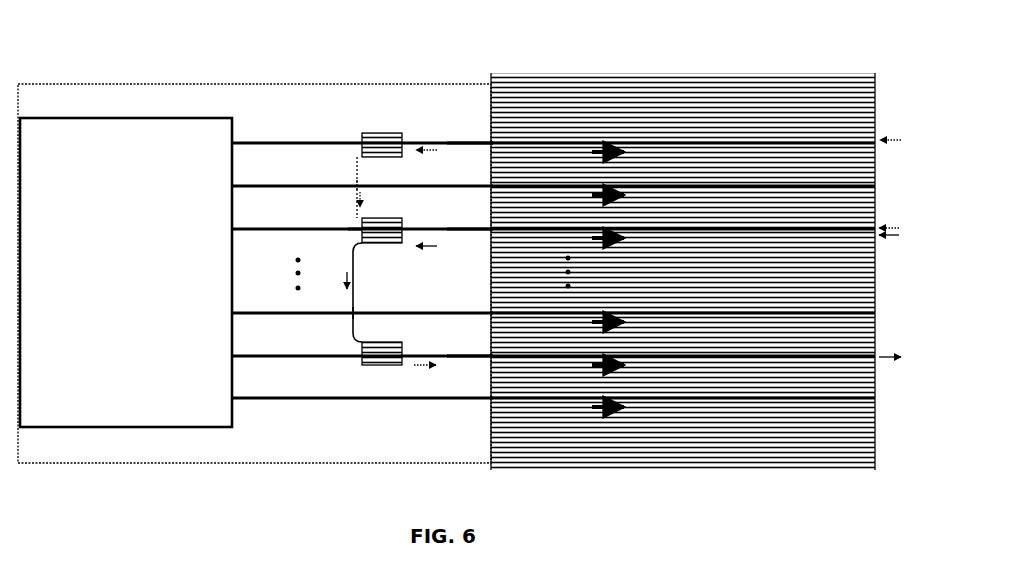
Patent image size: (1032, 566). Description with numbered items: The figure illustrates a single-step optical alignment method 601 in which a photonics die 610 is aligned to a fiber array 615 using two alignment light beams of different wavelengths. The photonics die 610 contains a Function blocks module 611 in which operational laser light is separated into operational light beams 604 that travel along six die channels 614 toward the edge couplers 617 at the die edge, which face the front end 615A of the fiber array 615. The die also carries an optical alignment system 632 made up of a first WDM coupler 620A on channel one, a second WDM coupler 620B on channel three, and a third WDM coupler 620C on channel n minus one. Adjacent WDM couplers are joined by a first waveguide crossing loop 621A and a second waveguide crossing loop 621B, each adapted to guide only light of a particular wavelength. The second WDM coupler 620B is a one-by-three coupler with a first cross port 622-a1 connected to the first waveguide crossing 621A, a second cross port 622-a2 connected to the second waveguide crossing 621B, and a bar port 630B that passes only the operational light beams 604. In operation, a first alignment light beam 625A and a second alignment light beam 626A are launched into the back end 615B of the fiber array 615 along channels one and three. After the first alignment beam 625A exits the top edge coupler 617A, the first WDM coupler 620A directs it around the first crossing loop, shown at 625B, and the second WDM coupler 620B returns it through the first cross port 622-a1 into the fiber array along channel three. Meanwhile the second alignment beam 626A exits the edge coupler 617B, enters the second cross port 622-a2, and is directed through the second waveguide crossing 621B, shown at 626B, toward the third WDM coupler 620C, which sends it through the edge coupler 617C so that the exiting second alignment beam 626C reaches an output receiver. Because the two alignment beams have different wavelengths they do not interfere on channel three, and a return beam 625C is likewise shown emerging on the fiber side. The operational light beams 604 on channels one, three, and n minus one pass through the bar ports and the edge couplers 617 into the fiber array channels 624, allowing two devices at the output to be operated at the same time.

The single-step optical alignment method 601 is at (118, 61).
The photonics die 610 is at (59, 113).
The Function blocks module 611 is at (218, 149).
The die channels 614 is at (272, 237).
The fiber array 615 is at (664, 245).
The front end of fiber array 615A is at (494, 70).
The back end (output) of fiber array 615B is at (870, 63).
The edge couplers 617 is at (491, 268).
The top edge coupler 617A is at (490, 143).
The edge coupler 617B is at (488, 230).
The edge coupler 617C is at (490, 357).
The first WDM coupler 620A is at (402, 133).
The second WDM coupler 620B is at (403, 240).
The third WDM coupler 620C is at (368, 352).
The first waveguide crossing loop 621A is at (356, 165).
The second waveguide crossing loop 621B is at (350, 268).
The first cross port 622-a1 is at (359, 219).
The second cross port 622-a2 is at (356, 244).
The fiber array channels 624 is at (512, 404).
The first alignment light beam 625A is at (895, 133).
The first alignment beam (looped) 625B is at (363, 194).
The third optical signal 625C is at (887, 223).
The second alignment light beam 626A is at (893, 238).
The second alignment beam (looped) 626B is at (346, 282).
The exiting second alignment beam 626C is at (887, 353).
The bar port 630B is at (361, 229).
The optical alignment system 632 is at (390, 275).
The operational light beams 604 is at (590, 422).